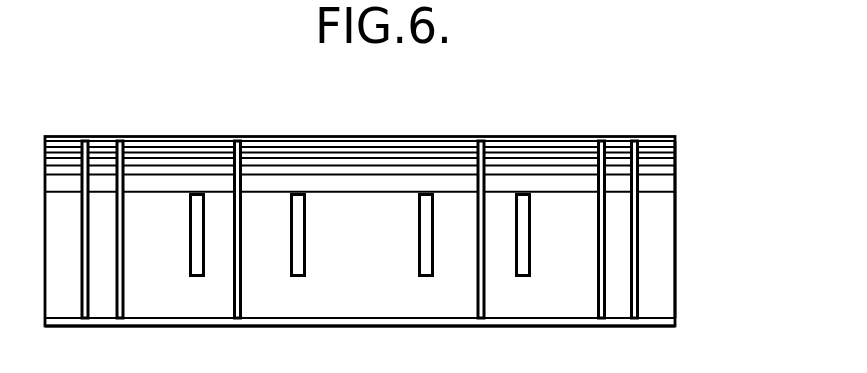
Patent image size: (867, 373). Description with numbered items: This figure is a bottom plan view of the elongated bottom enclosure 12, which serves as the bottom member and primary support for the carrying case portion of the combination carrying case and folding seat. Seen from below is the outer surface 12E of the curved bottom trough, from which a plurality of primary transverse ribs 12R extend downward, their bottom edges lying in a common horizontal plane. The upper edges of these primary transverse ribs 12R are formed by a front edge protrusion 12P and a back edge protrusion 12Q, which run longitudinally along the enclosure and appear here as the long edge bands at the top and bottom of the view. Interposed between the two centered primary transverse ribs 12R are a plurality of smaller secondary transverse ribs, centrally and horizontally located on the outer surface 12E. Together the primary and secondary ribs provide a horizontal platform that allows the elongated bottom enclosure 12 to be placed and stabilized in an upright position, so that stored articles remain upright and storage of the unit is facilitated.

The elongated bottom enclosure 12 is at (694, 185).
The back edge protrusion 12Q is at (676, 137).
The primary transverse ribs 12R is at (87, 142).
The outer surface 12E is at (658, 282).
The front edge protrusion 12P is at (675, 332).